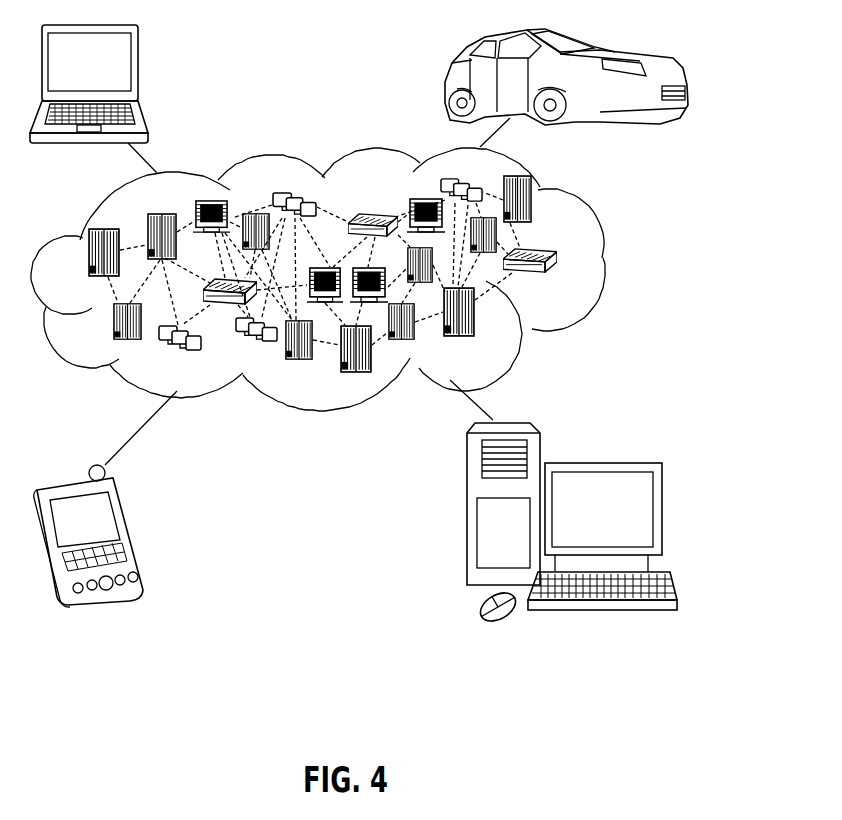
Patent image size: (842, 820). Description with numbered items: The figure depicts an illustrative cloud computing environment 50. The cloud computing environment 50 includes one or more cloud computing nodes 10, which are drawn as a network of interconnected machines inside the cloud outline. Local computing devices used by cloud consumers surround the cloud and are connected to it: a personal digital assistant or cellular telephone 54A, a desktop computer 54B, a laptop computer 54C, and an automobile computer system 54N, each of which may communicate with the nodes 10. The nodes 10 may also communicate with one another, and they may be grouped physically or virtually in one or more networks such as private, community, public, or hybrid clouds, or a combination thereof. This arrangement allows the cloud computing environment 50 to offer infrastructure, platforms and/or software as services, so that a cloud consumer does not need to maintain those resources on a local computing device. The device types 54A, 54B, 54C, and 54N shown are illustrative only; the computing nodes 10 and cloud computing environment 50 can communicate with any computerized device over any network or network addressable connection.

The cloud computing environment 50 is at (600, 262).
The cloud computing nodes 10 is at (565, 287).
The personal digital assistant or cellular telephone 54A is at (132, 529).
The desktop computer 54B is at (600, 463).
The laptop computer 54C is at (140, 69).
The automobile computer system 54N is at (445, 80).